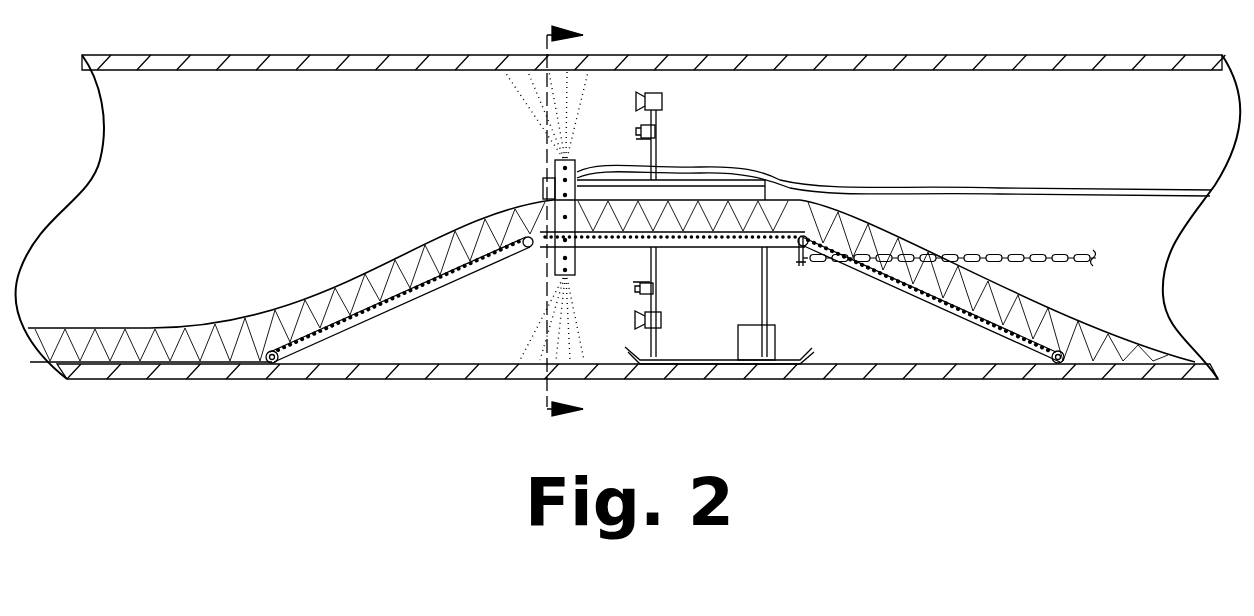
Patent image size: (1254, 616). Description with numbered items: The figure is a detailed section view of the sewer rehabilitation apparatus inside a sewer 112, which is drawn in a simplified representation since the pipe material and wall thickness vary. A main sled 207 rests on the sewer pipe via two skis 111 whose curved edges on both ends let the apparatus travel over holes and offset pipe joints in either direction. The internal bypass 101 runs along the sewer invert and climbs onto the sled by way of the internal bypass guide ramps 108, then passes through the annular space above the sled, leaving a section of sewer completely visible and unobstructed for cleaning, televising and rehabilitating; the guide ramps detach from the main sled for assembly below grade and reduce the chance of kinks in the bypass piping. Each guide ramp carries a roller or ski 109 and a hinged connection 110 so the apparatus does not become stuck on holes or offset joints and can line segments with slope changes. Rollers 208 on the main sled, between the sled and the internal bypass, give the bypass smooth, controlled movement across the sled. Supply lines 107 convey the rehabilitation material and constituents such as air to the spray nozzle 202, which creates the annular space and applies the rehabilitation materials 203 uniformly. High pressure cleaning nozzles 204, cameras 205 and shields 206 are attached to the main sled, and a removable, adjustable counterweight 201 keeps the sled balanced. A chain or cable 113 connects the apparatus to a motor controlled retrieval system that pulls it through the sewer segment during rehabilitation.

The internal bypass 101 is at (132, 328).
The supply lines 107 is at (898, 182).
The internal bypass guide ramps 108 is at (372, 318).
The roller or ski 109 is at (277, 363).
The hinged connection 110 is at (527, 247).
The skis 111 is at (822, 379).
The sewer 112 is at (407, 380).
The chain, cable, etc. 113 is at (1016, 252).
The counterweight 201 is at (778, 343).
The spray nozzle 202 is at (549, 170).
The rehabilitation materials 203 is at (520, 95).
The high pressure cleaning nozzles 204 is at (663, 97).
The cameras 205 is at (656, 127).
The shields 206 is at (647, 140).
The main sled 207 is at (720, 248).
The rollers 208 is at (773, 239).